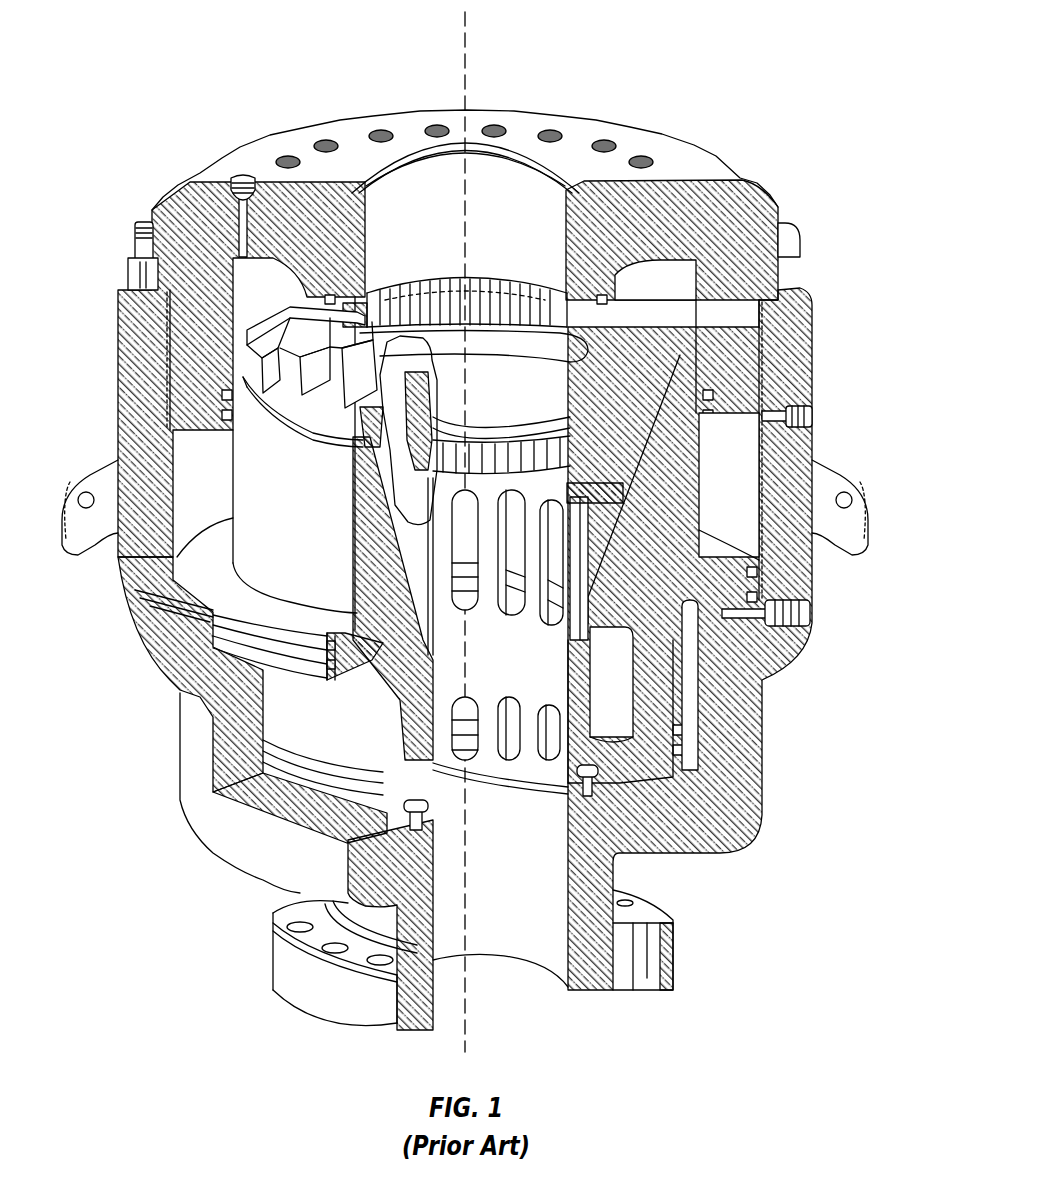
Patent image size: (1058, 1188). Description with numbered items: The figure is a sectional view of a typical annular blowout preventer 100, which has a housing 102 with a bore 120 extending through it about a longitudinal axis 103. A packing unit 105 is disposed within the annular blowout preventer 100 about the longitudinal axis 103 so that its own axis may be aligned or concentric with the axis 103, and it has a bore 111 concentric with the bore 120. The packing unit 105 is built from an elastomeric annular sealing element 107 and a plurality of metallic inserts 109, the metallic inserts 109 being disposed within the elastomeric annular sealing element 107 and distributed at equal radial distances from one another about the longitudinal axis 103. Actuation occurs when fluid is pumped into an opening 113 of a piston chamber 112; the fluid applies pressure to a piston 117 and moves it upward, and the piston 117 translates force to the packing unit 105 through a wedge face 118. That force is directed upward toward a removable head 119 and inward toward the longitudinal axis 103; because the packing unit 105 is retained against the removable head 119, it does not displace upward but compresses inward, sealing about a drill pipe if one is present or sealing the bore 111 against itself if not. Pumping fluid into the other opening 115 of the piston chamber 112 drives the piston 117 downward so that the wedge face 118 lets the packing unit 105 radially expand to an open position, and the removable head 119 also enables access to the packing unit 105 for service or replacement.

The annular blowout preventer 100 is at (472, 532).
The housing 102 is at (137, 453).
The longitudinal axis 103 is at (463, 42).
The packing unit 105 is at (657, 300).
The elastomeric annular sealing element 107 is at (654, 358).
The metallic inserts 109 is at (267, 375).
The bore of the packing unit 111 is at (570, 408).
The piston chamber 112 is at (742, 457).
The opening of the piston chamber 113 is at (809, 612).
The opening of the piston chamber 115 is at (816, 417).
The piston 117 is at (730, 598).
The wedge face 118 is at (637, 547).
The removable head 119 is at (182, 207).
The bore 120 is at (533, 950).